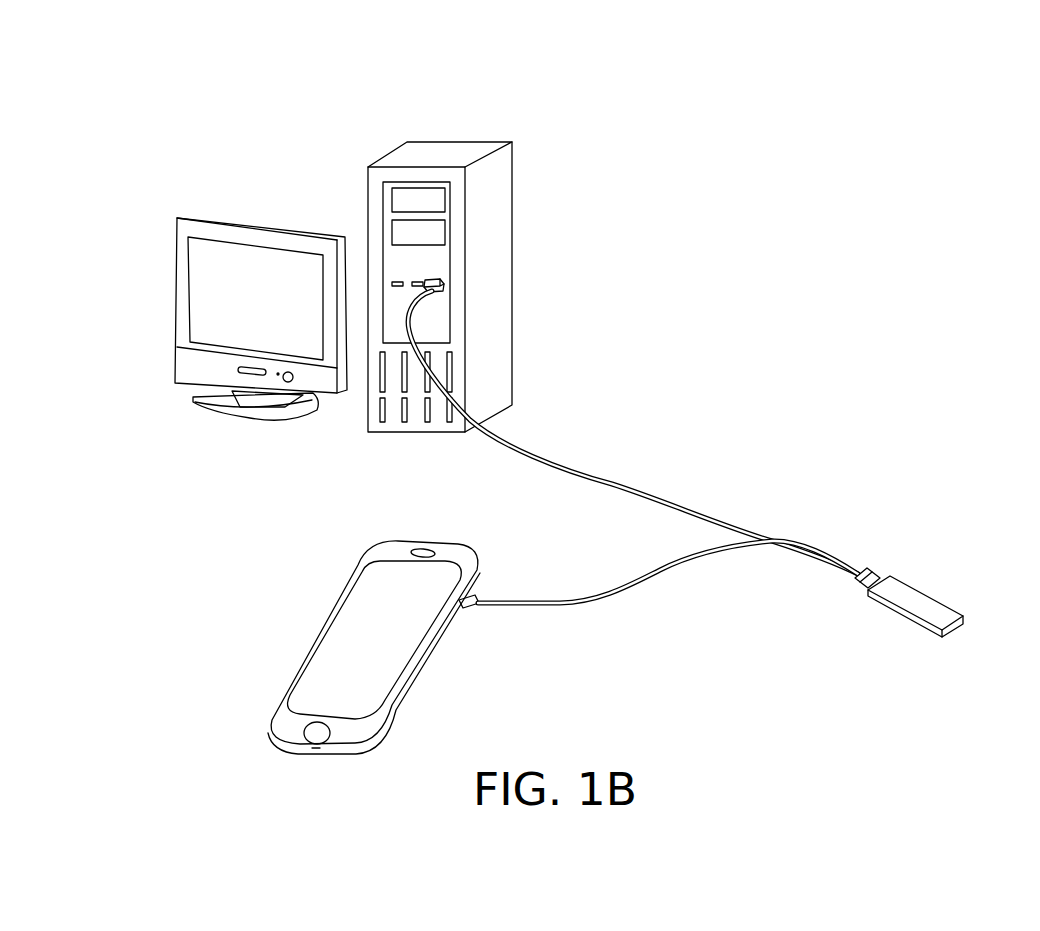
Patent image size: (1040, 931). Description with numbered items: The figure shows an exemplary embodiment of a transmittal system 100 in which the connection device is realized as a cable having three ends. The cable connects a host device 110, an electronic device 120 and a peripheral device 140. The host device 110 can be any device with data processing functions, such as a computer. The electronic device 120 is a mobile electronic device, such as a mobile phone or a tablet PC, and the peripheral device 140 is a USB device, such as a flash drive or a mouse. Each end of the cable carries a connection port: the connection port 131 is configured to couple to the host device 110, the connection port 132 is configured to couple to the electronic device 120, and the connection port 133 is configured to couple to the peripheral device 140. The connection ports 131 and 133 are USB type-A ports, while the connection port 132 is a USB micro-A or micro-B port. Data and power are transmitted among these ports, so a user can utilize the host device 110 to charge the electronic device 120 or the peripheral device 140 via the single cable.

The transmittal system 100 is at (807, 137).
The host device 110 is at (452, 150).
The electronic device 120 is at (347, 623).
The connection port 131 is at (436, 280).
The connection port 132 is at (472, 597).
The connection port 133 is at (868, 572).
The peripheral device 140 is at (926, 607).